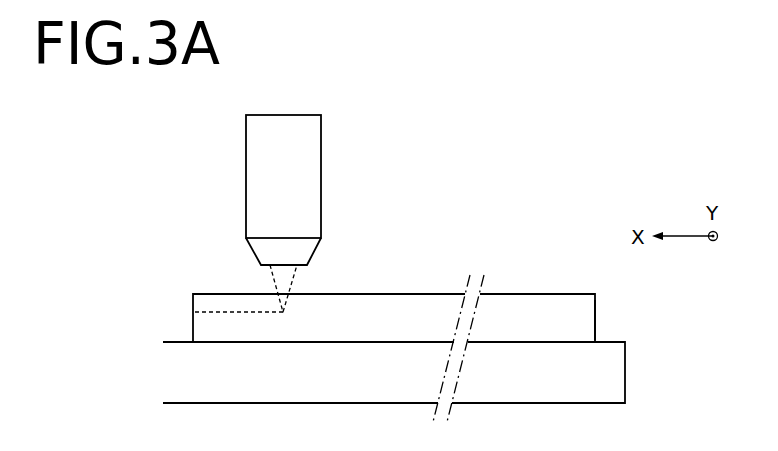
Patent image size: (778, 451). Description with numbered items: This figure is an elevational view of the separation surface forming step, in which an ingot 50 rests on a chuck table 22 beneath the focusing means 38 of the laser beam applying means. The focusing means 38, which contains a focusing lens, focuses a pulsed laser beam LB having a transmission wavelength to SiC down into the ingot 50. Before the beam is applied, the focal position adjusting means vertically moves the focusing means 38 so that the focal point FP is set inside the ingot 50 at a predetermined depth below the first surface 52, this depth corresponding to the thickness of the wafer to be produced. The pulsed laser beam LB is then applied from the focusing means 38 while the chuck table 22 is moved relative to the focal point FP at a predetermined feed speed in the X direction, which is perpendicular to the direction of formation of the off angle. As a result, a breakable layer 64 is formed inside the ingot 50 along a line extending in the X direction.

The focusing means 38 is at (309, 167).
The pulsed laser beam LB is at (273, 284).
The focal point FP is at (285, 312).
The breakable layer 64 is at (210, 312).
The first surface 52 is at (545, 294).
The ingot 50 is at (604, 314).
The chuck table 22 is at (615, 383).